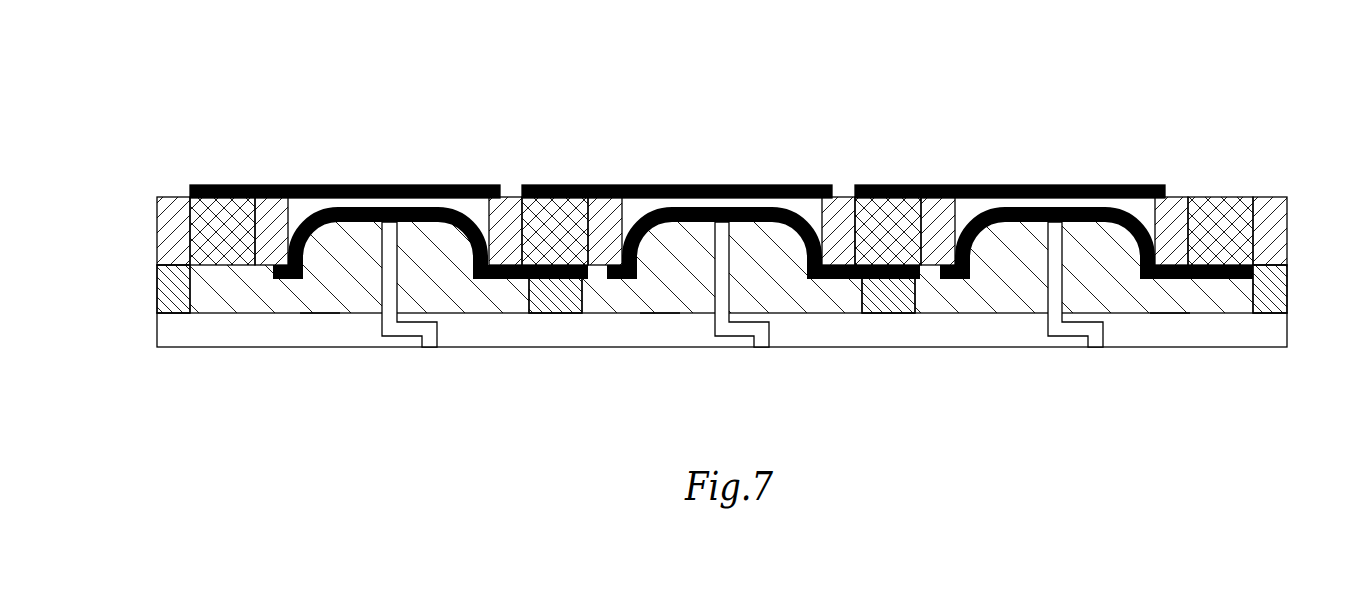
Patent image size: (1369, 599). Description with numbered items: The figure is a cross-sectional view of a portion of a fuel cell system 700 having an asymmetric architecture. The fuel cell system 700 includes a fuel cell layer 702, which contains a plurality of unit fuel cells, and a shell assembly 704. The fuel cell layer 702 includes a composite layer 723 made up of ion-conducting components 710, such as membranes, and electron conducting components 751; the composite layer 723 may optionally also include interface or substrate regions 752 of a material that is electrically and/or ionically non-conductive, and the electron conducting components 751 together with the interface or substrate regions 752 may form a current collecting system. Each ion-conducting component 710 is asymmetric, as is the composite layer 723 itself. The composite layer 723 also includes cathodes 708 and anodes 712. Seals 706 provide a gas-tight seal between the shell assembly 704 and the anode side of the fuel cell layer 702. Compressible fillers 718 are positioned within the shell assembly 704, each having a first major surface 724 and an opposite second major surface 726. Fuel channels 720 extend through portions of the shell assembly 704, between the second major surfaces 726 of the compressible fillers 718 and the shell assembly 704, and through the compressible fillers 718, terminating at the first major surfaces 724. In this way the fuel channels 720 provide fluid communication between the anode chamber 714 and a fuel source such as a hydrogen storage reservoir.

The fuel cell system 700 is at (1267, 68).
The fuel cell layer 702 is at (98, 185).
The shell assembly 704 is at (1272, 348).
The seals 706 is at (172, 302).
The cathodes 708 is at (345, 184).
The ion-conducting components 710 is at (478, 212).
The anodes 712 is at (488, 280).
The anode chamber 714 is at (318, 313).
The compressible fillers 718 is at (252, 307).
The fuel channels 720 is at (407, 347).
The composite layer 723 is at (147, 198).
The first major surface 724 is at (343, 223).
The second major surface 726 is at (520, 313).
The electron conducting components 751 is at (230, 210).
The interface or substrate regions 752 is at (183, 210).